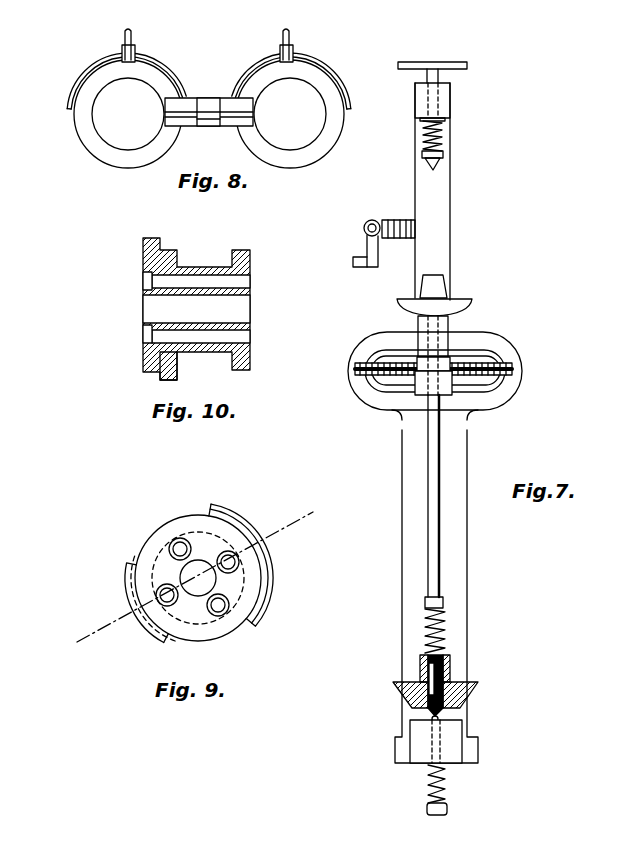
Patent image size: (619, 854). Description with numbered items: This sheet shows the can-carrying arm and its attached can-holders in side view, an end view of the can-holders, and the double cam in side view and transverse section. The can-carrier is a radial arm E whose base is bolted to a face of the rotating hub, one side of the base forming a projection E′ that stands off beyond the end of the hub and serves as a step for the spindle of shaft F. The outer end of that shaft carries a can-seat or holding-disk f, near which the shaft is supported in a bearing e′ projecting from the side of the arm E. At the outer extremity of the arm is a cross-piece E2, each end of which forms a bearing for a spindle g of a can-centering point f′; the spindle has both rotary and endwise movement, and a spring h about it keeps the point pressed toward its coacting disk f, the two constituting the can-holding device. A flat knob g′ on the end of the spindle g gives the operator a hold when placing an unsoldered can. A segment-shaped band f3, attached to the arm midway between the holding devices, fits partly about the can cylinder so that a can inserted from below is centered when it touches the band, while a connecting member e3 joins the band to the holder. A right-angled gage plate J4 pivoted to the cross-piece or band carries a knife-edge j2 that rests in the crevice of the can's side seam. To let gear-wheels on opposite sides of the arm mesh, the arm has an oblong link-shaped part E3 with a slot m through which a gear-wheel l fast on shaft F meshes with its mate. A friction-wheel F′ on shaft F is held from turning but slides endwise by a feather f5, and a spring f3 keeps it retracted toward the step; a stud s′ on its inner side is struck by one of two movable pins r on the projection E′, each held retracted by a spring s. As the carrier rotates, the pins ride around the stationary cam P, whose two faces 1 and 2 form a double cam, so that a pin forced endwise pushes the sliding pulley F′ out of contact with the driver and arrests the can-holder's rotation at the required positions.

In FIG. 8, the flat knob g′ is at (209, 114).
In FIG. 7, the flat knob g′ is at (436, 64).
In FIG. 8, the segment-shaped band f3 is at (326, 68).
In FIG. 7, the segment-shaped band f3 is at (399, 222).
In FIG. 8, the cross-piece E2 is at (187, 105).
In FIG. 8, the central block e3 is at (209, 108).
In FIG. 8, the right-angled plate J4 is at (134, 38).
In FIG. 7, the right-angled plate J4 is at (370, 265).
In FIG. 8, the knife-edge j2 is at (126, 30).
In FIG. 7, the knife-edge j2 is at (353, 261).
In FIG. 10, the cam face 1 is at (150, 240).
In FIG. 9, the cam face 1 is at (164, 645).
In FIG. 10, the stationary cam P is at (177, 248).
In FIG. 9, the stationary cam P is at (197, 577).
In FIG. 10, the cam face 2 is at (171, 380).
In FIG. 9, the cam face 2 is at (270, 575).
In FIG. 7, the radial arm E is at (430, 232).
In FIG. 7, the spindle g is at (427, 78).
In FIG. 7, the spring h is at (442, 131).
In FIG. 7, the can-centering point f′ is at (437, 170).
In FIG. 7, the can-seat or holding-disk f is at (445, 306).
In FIG. 7, the bearing e′ is at (434, 340).
In FIG. 7, the oblong link-shaped part E3 is at (372, 396).
In FIG. 7, the gear-wheel l is at (470, 364).
In FIG. 7, the slot m is at (462, 378).
In FIG. 7, the friction-wheel F′ is at (431, 521).
In FIG. 7, the feather f5 is at (427, 676).
In FIG. 7, the stud s′ is at (450, 713).
In FIG. 7, the projection E′ is at (427, 757).
In FIG. 7, the spring s is at (444, 778).
In FIG. 7, the movable pin r is at (436, 811).